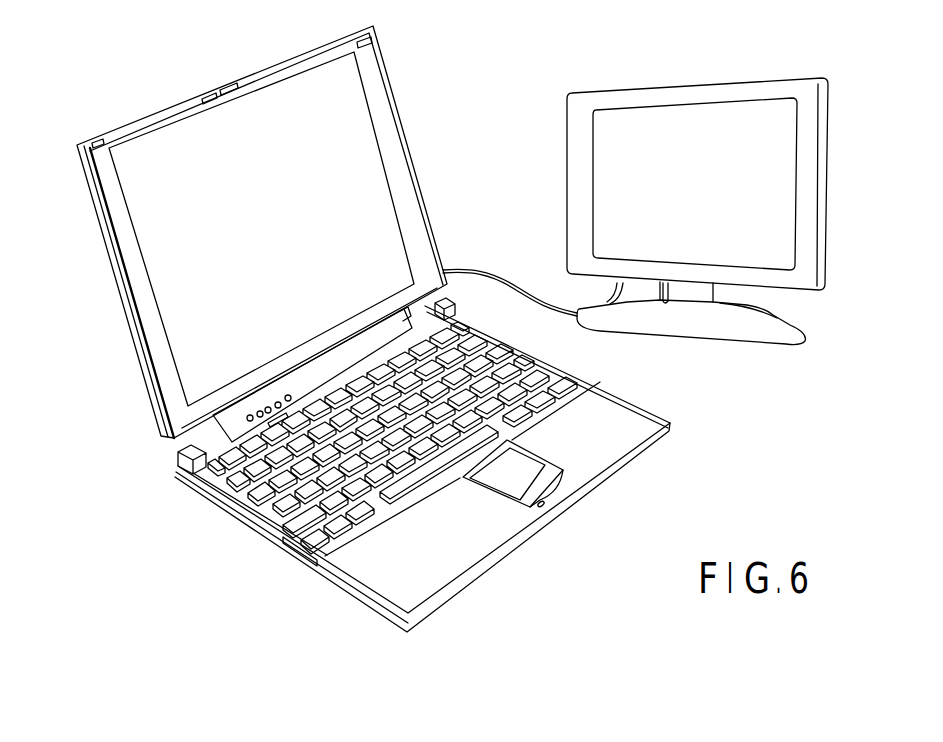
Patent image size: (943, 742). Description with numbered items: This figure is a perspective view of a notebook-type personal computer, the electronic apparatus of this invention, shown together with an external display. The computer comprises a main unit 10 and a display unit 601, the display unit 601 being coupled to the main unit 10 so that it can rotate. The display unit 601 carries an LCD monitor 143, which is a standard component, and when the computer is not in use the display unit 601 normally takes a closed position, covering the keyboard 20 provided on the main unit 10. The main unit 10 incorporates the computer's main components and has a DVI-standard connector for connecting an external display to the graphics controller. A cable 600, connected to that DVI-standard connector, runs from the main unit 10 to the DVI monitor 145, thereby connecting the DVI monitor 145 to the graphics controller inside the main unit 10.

The main unit 10 is at (472, 557).
The keyboard 20 is at (273, 503).
The LCD monitor 143 is at (271, 103).
The DVI monitor 145 is at (688, 127).
The cable 600 is at (495, 278).
The display unit 601 is at (133, 318).